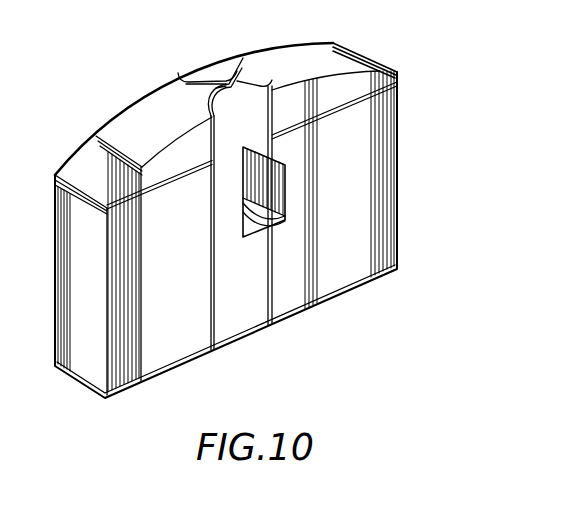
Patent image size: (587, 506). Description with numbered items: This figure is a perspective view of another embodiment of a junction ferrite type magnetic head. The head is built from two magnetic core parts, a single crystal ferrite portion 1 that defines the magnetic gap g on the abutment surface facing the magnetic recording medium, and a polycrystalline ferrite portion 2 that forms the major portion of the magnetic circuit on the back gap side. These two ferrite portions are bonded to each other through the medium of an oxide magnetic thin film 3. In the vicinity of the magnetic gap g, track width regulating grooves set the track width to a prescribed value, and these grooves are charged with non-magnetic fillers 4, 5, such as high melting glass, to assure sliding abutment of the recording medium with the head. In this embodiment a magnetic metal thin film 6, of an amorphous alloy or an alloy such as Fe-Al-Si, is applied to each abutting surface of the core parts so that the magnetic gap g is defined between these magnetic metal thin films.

The single crystal ferrite portion 1 is at (137, 115).
The polycrystalline ferrite portion 2 is at (393, 202).
The oxide magnetic thin film 3 is at (398, 74).
The non-magnetic filler 4 is at (250, 320).
The non-magnetic filler 5 is at (222, 67).
The magnetic metal thin film 6 is at (197, 82).
The magnetic gap g is at (220, 90).